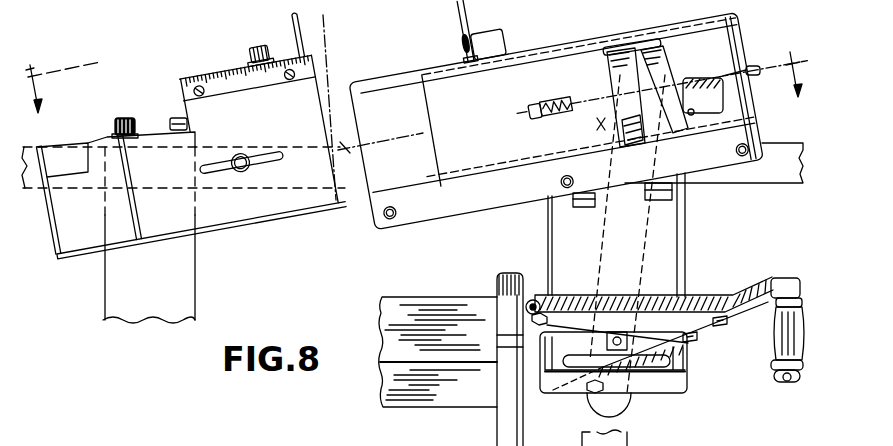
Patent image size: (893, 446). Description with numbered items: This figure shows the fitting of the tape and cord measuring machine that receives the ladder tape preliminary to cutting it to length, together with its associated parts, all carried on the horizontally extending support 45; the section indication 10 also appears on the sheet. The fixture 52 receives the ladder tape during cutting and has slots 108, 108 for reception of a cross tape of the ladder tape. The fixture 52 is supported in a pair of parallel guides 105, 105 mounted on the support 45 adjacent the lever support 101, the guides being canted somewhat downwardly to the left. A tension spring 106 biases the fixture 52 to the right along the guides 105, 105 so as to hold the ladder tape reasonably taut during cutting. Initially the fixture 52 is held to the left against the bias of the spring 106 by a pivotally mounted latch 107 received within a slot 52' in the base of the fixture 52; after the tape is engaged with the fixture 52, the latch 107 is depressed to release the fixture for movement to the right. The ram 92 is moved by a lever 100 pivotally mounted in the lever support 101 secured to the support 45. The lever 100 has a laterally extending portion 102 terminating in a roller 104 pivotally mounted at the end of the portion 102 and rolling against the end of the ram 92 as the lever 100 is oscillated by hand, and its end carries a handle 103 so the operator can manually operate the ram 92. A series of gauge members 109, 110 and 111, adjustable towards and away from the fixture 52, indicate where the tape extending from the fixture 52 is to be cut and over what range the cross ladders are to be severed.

The section line indicator 10 is at (417, 97).
The horizontally extending support 45 is at (780, 168).
The fixture 52 is at (624, 229).
The slot 52' is at (525, 43).
The ram 92 is at (428, 300).
The lever 100 is at (763, 305).
The lever support 101 is at (686, 262).
The laterally extending portion 102 is at (570, 297).
The handle 103 is at (766, 358).
The roller 104 is at (532, 288).
The parallel guides 105 is at (431, 187).
The tension spring 106 is at (745, 67).
The latch 107 is at (477, 13).
The slots 108 is at (618, 67).
The gauge member 109 is at (300, 17).
The gauge member 110 is at (132, 158).
The gauge member 111 is at (48, 155).